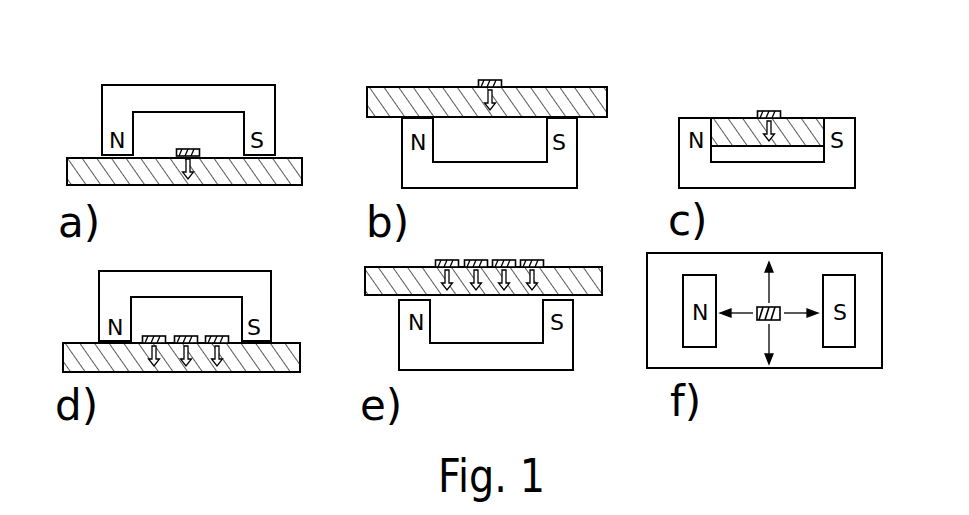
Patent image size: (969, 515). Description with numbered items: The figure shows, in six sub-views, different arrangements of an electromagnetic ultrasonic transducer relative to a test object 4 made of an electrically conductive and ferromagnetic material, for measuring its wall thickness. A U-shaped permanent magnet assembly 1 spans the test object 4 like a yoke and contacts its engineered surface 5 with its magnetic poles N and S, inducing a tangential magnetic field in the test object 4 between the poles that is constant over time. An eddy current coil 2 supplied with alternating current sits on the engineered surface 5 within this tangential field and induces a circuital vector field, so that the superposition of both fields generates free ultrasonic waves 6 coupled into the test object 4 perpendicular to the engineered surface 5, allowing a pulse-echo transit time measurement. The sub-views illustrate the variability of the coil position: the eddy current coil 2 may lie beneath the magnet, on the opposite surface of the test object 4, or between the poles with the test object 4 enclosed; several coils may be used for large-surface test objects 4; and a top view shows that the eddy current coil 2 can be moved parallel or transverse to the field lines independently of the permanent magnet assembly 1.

The permanent magnet assembly 1 is at (227, 93).
The eddy current coil 2 is at (486, 80).
The test object 4 is at (283, 172).
The engineered surface 5 is at (93, 146).
The free ultrasonic waves 6 is at (197, 186).